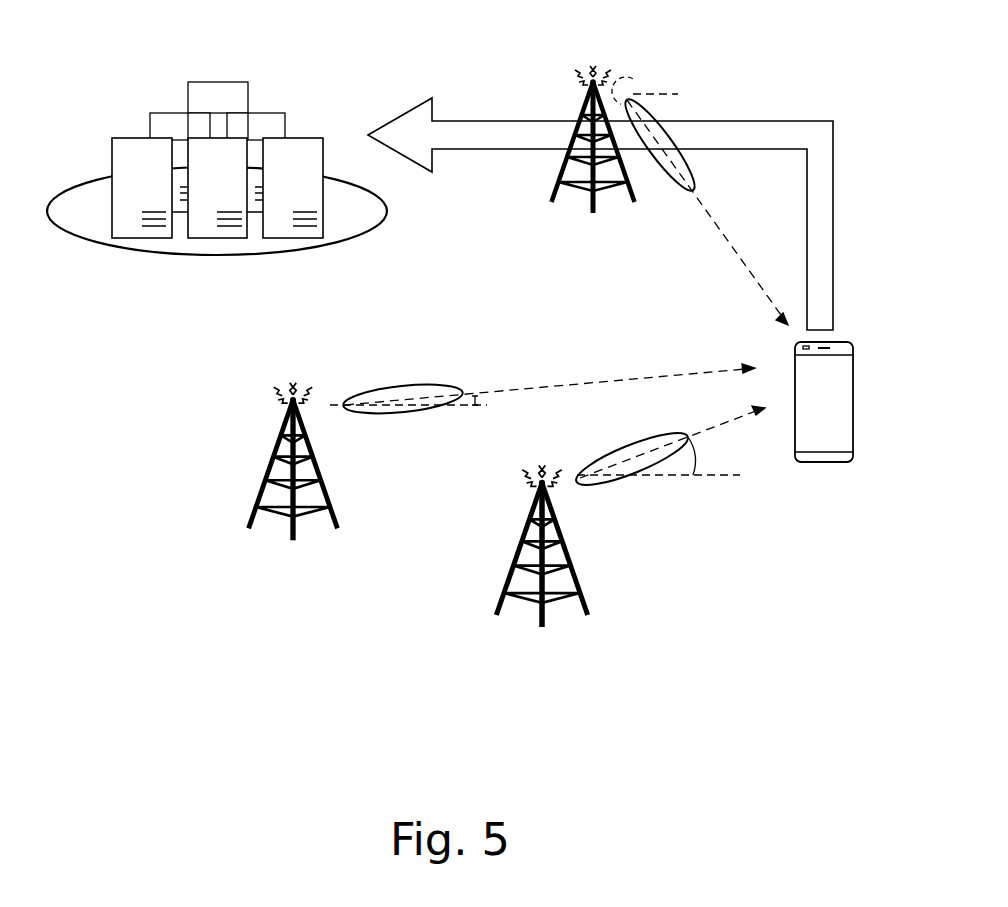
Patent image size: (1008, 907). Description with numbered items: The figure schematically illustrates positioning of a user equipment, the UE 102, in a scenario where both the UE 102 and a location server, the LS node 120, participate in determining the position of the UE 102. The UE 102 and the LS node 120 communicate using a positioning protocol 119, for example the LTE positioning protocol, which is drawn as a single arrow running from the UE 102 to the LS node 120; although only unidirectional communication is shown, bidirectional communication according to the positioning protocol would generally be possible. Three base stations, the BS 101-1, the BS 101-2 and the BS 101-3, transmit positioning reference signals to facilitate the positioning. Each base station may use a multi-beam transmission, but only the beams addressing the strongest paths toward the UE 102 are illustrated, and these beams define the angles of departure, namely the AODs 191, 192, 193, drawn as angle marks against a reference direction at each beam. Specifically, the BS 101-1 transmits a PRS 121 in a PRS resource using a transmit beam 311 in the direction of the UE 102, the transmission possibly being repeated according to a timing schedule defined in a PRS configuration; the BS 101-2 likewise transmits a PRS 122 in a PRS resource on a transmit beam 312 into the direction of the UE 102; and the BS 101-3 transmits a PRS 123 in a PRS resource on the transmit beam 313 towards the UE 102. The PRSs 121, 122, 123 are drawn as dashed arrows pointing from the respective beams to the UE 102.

The LS node 120 is at (222, 305).
The positioning protocol 119 is at (482, 150).
The BS 101-1 is at (310, 528).
The BS 101-2 is at (608, 207).
The BS 101-3 is at (560, 613).
The UE 102 is at (827, 463).
The PRS 121 is at (557, 380).
The PRS 122 is at (728, 275).
The PRS 123 is at (742, 452).
The AOD 191 is at (450, 393).
The AOD 192 is at (617, 84).
The AOD 193 is at (678, 465).
The transmit beam 311 is at (398, 417).
The transmit beam 312 is at (692, 167).
The transmit beam 313 is at (648, 475).